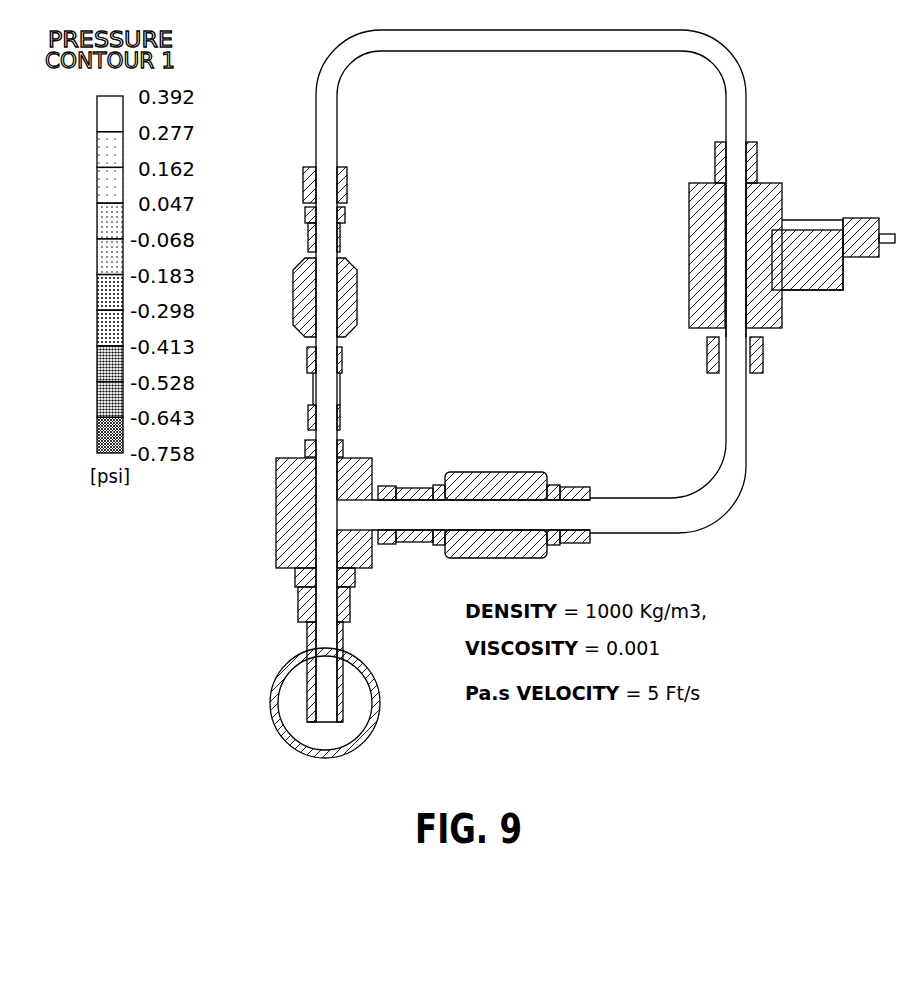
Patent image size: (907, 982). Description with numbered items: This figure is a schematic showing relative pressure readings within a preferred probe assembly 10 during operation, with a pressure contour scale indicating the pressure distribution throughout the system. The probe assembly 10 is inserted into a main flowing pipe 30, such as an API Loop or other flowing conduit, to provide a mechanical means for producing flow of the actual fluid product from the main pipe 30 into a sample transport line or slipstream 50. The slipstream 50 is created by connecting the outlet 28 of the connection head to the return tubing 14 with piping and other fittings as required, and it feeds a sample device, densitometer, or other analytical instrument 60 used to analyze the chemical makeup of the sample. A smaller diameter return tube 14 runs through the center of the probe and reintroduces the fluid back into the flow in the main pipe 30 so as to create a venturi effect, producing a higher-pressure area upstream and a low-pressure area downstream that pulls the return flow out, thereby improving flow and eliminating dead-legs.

The probe assembly 10 is at (268, 574).
The return tube 14 is at (322, 388).
The outlet 28 is at (415, 485).
The main pipe 30 is at (271, 700).
The slipstream 50 is at (744, 449).
The analytical instrument 60 is at (777, 183).